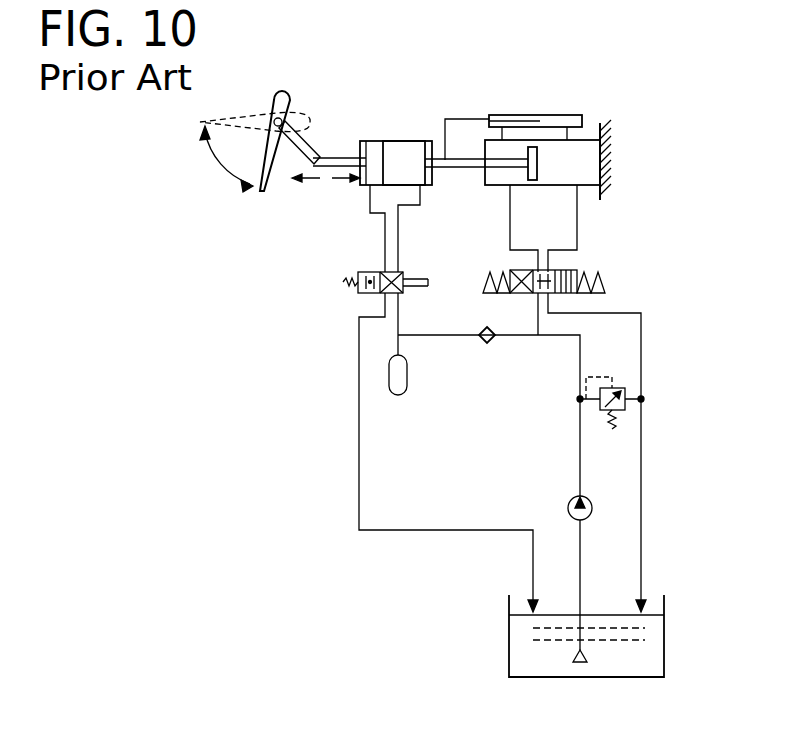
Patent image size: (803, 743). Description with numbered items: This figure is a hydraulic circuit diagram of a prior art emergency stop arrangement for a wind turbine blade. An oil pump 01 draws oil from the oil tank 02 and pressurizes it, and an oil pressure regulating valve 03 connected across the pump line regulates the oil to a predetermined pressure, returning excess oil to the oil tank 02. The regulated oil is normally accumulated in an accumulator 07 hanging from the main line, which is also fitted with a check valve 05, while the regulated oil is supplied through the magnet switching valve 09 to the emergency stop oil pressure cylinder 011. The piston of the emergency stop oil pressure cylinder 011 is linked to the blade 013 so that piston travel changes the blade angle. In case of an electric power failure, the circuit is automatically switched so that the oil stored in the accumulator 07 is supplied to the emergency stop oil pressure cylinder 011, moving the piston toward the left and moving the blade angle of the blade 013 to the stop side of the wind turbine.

The blade 013 is at (288, 96).
The emergency stop oil pressure cylinder 011 is at (403, 141).
The magnet switching valve 09 is at (372, 293).
The accumulator 07 is at (398, 395).
The check valve 05 is at (489, 343).
The oil pressure regulating valve 03 is at (628, 390).
The oil pump 01 is at (565, 510).
The oil tank 02 is at (665, 640).